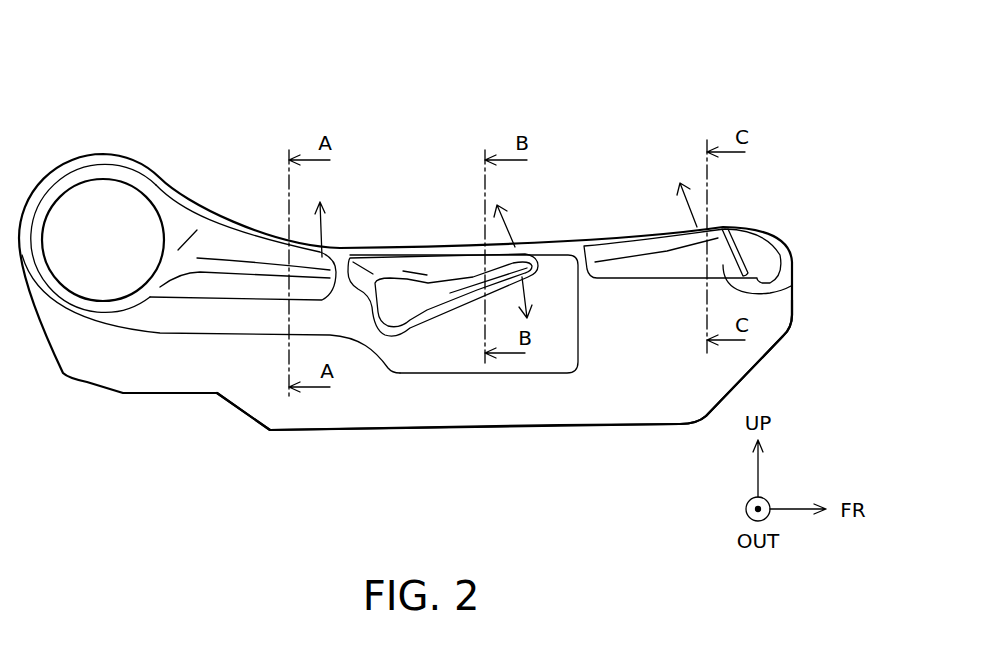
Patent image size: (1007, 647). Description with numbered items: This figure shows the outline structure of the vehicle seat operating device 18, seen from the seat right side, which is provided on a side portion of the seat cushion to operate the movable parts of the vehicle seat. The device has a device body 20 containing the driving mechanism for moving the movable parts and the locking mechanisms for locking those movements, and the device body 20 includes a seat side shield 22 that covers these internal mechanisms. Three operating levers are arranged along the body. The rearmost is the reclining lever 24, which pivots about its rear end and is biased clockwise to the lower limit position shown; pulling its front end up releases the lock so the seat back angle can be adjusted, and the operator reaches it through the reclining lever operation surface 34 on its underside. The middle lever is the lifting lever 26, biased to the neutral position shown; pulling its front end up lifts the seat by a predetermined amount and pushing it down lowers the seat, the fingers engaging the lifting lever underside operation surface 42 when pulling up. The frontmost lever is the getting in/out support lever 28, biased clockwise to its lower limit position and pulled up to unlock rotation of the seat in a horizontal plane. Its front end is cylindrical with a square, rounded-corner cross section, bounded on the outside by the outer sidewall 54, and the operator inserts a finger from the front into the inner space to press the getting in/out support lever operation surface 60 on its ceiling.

The vehicle seat operating device 18 is at (160, 112).
The device body 20 is at (597, 388).
The seat side shield 22 is at (442, 410).
The reclining lever 24 is at (245, 247).
The lifting lever 26 is at (447, 263).
The getting in/out support lever 28 is at (673, 238).
The reclining lever operation surface 34 is at (268, 280).
The lifting lever underside operation surface 42 is at (463, 293).
The outer sidewall 54 is at (790, 286).
The getting in/out support lever operation surface 60 is at (741, 250).